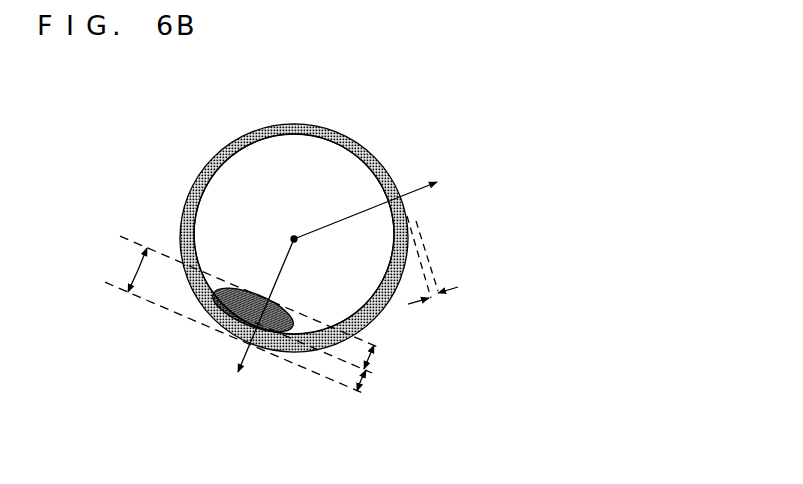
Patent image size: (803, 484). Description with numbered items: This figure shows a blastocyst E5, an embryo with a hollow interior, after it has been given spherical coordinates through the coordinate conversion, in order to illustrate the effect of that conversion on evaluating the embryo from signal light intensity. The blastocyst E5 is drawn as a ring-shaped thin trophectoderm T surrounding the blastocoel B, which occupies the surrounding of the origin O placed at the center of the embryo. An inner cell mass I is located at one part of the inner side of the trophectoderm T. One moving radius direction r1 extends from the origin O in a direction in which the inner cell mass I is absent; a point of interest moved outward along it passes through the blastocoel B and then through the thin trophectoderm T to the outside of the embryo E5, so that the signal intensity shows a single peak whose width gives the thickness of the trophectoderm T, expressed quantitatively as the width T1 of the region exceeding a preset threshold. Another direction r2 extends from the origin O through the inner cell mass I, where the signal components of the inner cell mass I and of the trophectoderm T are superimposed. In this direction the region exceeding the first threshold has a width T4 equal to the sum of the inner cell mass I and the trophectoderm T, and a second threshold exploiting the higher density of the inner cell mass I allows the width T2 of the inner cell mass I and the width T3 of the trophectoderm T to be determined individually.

The blastocyst E5 is at (555, 238).
The trophectoderm T is at (360, 148).
The blastocoel B is at (252, 173).
The inner cell mass I is at (216, 311).
The origin O is at (287, 230).
The moving radius direction r1 is at (382, 201).
The direction r2 is at (254, 324).
The width T1 is at (432, 270).
The width of the inner cell mass T2 is at (332, 350).
The width of the trophectoderm T3 is at (254, 346).
The width T4 is at (241, 292).